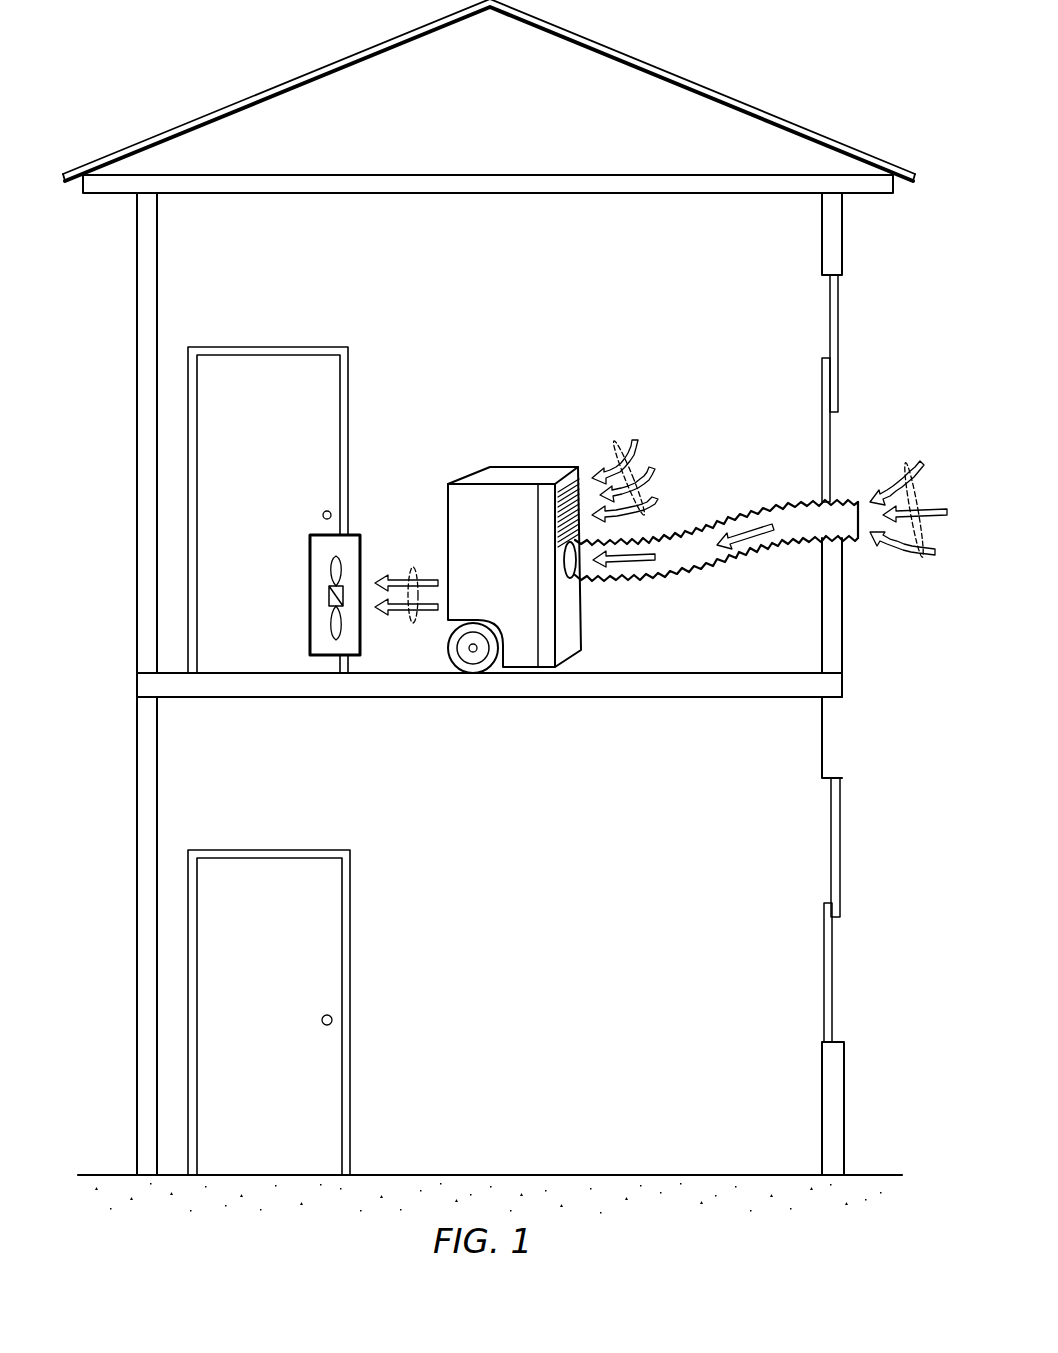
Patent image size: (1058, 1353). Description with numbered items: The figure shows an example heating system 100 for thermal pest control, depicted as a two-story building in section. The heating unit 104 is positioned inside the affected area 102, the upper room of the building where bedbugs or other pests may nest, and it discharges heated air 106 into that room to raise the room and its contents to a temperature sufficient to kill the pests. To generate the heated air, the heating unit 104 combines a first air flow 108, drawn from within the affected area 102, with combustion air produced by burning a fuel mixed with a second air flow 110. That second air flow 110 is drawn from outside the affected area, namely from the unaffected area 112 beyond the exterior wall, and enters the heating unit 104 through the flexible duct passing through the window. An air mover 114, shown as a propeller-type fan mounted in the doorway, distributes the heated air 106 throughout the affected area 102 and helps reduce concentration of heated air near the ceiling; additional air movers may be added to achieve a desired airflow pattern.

The heating system 100 is at (489, 607).
The affected area 102 is at (491, 322).
The heating unit 104 is at (653, 529).
The heated air 106 is at (406, 567).
The first air flow 108 is at (620, 460).
The second air flow 110 is at (908, 542).
The unaffected area 112 is at (904, 391).
The air mover 114 is at (302, 595).